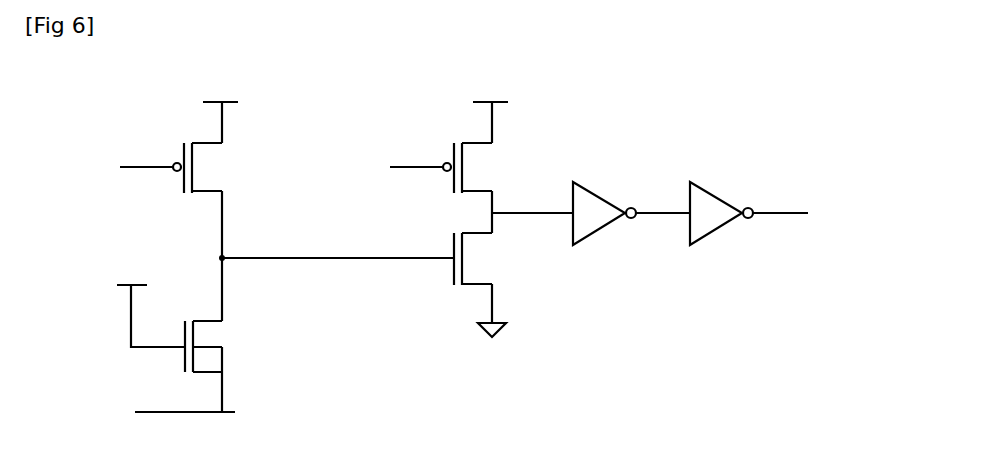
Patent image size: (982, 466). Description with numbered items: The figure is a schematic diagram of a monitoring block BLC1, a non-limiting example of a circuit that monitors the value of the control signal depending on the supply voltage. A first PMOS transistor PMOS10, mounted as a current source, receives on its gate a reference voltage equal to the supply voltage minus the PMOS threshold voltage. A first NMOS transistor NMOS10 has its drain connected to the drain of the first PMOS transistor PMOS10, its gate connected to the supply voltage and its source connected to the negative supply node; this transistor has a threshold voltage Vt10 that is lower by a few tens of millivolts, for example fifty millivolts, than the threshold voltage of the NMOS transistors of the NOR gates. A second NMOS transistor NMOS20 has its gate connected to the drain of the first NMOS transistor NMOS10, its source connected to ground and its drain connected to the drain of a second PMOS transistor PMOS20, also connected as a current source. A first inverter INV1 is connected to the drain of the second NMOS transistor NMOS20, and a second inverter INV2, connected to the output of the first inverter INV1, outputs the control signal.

The monitoring block BLC1 is at (758, 102).
The first PMOS transistor PMOS10 is at (233, 140).
The second PMOS transistor PMOS20 is at (503, 140).
The first NMOS transistor NMOS10 is at (232, 377).
The second NMOS transistor NMOS20 is at (503, 285).
The first inverter INV1 is at (603, 232).
The second inverter INV2 is at (718, 232).
The threshold voltage of the first NMOS transistor Vt10 is at (336, 262).